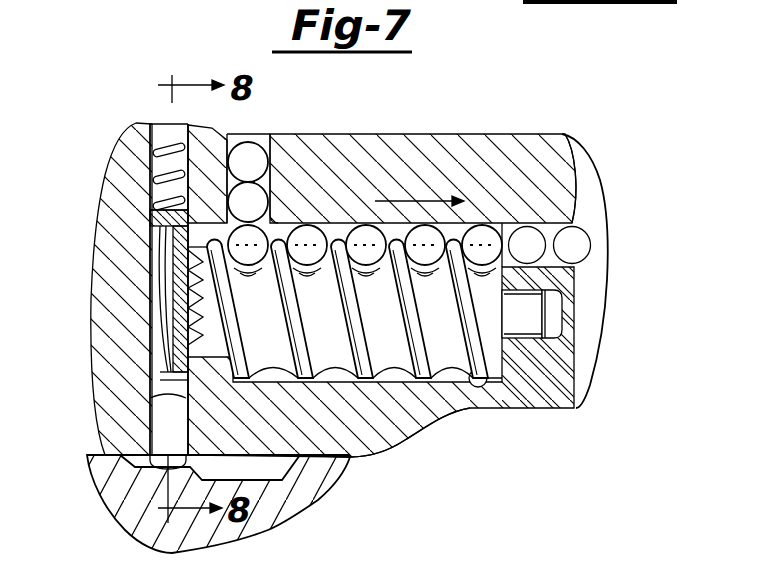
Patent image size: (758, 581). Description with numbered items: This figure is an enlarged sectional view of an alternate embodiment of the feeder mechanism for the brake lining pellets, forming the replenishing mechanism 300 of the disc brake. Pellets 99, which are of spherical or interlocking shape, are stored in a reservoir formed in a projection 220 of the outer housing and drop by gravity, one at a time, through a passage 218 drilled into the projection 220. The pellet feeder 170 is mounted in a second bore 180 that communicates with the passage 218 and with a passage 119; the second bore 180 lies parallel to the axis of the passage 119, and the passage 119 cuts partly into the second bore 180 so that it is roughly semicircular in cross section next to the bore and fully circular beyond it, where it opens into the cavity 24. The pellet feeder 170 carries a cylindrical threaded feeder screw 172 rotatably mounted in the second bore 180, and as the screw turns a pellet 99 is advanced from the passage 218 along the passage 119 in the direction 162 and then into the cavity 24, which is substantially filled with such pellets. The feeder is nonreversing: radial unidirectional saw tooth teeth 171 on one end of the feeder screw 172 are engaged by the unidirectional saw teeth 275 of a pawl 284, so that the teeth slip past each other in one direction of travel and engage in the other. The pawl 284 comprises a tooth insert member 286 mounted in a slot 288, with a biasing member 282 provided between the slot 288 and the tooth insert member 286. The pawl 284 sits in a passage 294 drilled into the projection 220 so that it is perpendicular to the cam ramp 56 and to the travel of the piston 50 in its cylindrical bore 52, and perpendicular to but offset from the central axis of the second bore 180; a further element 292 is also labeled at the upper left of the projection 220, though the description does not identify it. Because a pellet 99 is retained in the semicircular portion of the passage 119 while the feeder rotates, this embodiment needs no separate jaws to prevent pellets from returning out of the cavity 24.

The cavity 24 is at (597, 208).
The piston 50 is at (120, 498).
The cylindrical bore 52 is at (345, 467).
The cam ramp 56 is at (112, 457).
The brake lining pellets 99 is at (400, 134).
The passage 119 is at (568, 136).
The direction 162 is at (420, 222).
The pellet feeder 170 is at (410, 440).
The radial unidirectional saw tooth teeth 171 is at (199, 222).
The feeder screw 172 is at (524, 223).
The second bore 180 is at (472, 393).
The passage 218 is at (265, 184).
The projection 220 is at (113, 197).
The unidirectional saw teeth 275 is at (190, 283).
The biasing member 282 is at (170, 293).
The pawl 284 is at (157, 242).
The tooth insert member 286 is at (180, 342).
The slot 288 is at (160, 335).
The bore 292 is at (143, 195).
The passage 294 is at (173, 128).
The replenishing mechanism 300 is at (137, 181).